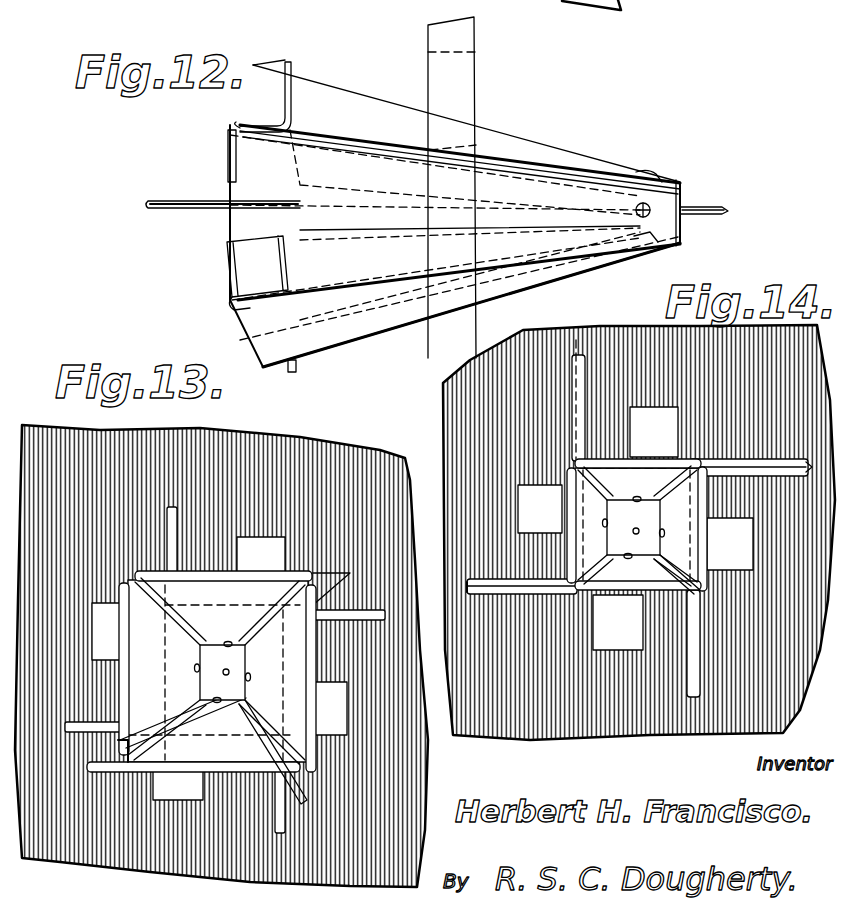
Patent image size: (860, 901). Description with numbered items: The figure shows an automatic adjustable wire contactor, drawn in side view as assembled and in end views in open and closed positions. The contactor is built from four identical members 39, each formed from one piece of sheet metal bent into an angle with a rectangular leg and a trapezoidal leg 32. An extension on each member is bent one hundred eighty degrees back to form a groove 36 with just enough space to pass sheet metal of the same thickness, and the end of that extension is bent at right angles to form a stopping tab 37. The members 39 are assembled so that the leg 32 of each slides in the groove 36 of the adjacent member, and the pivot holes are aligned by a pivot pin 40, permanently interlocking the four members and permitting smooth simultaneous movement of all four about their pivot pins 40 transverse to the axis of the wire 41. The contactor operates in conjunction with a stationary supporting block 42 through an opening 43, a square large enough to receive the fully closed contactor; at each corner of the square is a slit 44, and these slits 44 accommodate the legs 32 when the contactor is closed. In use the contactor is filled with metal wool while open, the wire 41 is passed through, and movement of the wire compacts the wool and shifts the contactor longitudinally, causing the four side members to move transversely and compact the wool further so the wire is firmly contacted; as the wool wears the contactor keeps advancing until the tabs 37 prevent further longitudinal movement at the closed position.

In FIG. 13, the leg 32 is at (148, 598).
In FIG. 14, the leg 32 is at (572, 360).
In FIG. 12, the groove 36 is at (238, 122).
In FIG. 12, the stopping tab 37 is at (290, 63).
In FIG. 13, the stopping tab 37 is at (100, 612).
In FIG. 14, the stopping tab 37 is at (518, 497).
In FIG. 12, the members 39 is at (310, 95).
In FIG. 13, the members 39 is at (200, 571).
In FIG. 14, the members 39 is at (607, 413).
In FIG. 12, the pivot pin 40 is at (651, 209).
In FIG. 13, the pivot pin 40 is at (226, 676).
In FIG. 14, the pivot pin 40 is at (640, 524).
In FIG. 12, the wire 41 is at (160, 199).
In FIG. 13, the wire 41 is at (130, 762).
In FIG. 14, the wire 41 is at (580, 593).
In FIG. 12, the stationary supporting block 42 is at (477, 70).
In FIG. 13, the stationary supporting block 42 is at (445, 432).
In FIG. 14, the stationary supporting block 42 is at (639, 532).
In FIG. 12, the opening 43 is at (455, 148).
In FIG. 13, the opening 43 is at (290, 578).
In FIG. 14, the opening 43 is at (700, 468).
In FIG. 13, the slit 44 is at (172, 508).
In FIG. 14, the slit 44 is at (582, 360).